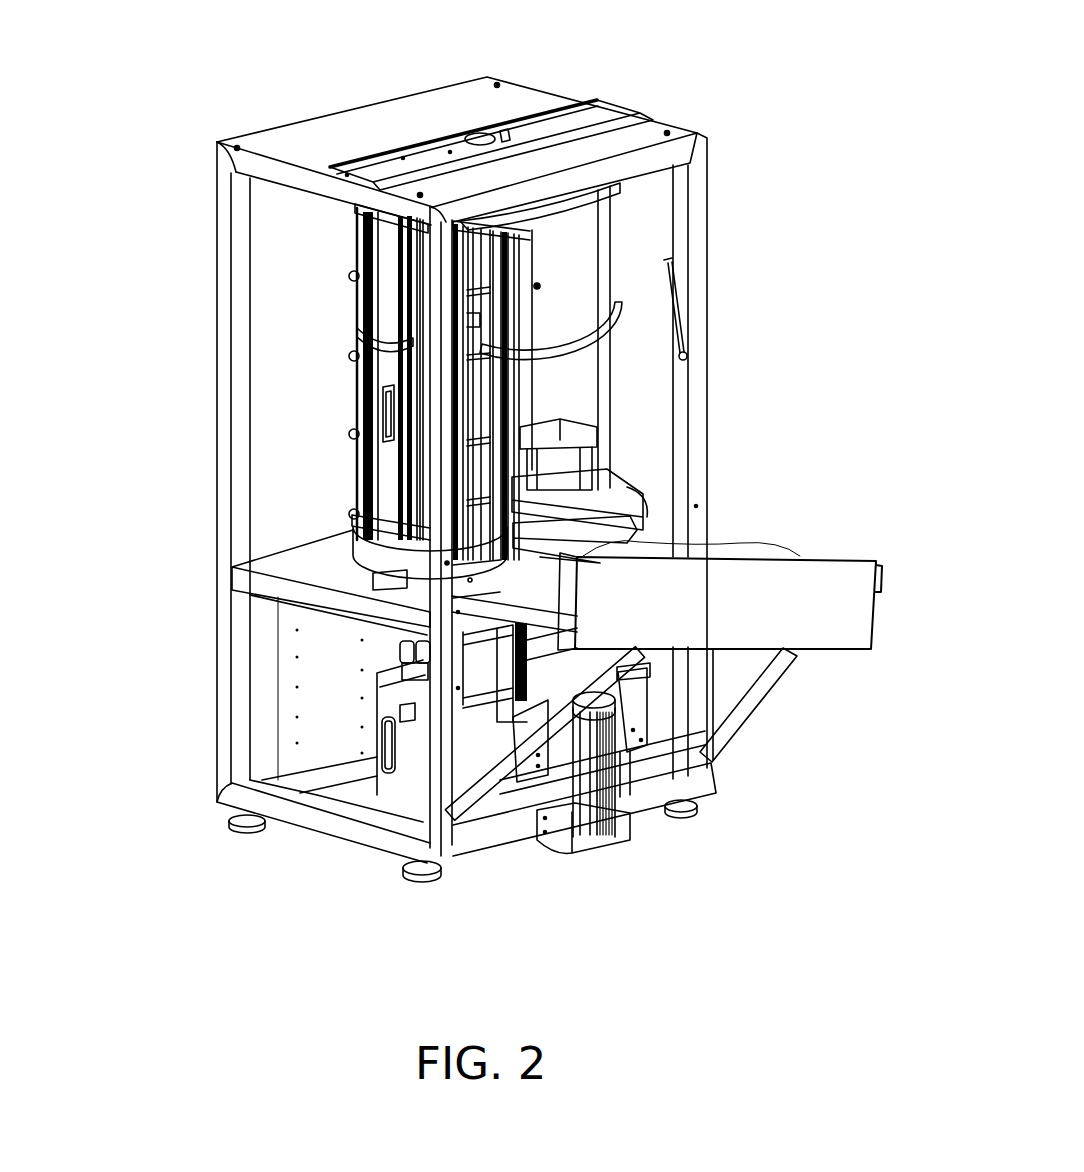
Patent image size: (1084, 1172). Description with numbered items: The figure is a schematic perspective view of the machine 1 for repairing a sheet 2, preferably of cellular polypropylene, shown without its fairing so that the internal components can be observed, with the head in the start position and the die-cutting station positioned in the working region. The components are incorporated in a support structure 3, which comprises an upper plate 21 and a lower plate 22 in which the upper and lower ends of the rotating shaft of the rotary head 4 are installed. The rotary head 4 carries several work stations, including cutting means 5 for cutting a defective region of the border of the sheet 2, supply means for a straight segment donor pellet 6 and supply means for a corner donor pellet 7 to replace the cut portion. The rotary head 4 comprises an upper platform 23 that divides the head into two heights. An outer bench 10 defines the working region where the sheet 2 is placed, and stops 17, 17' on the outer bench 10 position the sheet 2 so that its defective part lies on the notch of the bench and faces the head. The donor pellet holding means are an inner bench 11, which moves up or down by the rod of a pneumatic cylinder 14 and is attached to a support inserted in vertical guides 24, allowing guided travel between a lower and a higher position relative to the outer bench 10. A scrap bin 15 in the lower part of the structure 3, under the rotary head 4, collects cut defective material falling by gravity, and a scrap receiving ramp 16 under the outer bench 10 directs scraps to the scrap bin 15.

The machine 1 is at (760, 226).
The sheet 2 is at (788, 622).
The support structure 3 is at (213, 303).
The rotary head 4 is at (352, 396).
The cutting means 5 is at (567, 470).
The straight segment donor pellet supply means 6 is at (397, 258).
The corner donor pellet supply means 7 is at (355, 470).
The outer bench 10 is at (752, 542).
The inner bench 11 is at (710, 760).
The pneumatic cylinder 14 is at (604, 812).
The scrap bin 15 is at (400, 770).
The scrap receiving ramp 16 is at (470, 840).
The stop 17 is at (470, 544).
The stop 17' is at (492, 627).
The upper plate 21 is at (400, 116).
The lower plate 22 is at (303, 567).
The upper platform 23 is at (620, 327).
The vertical guides 24 is at (532, 790).